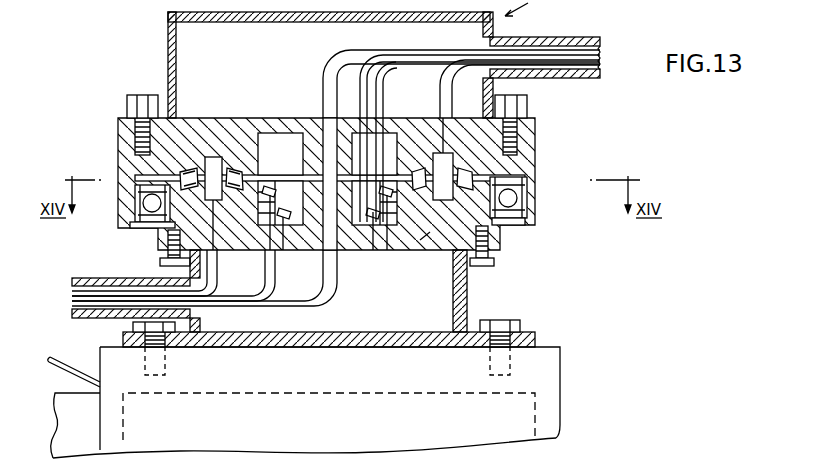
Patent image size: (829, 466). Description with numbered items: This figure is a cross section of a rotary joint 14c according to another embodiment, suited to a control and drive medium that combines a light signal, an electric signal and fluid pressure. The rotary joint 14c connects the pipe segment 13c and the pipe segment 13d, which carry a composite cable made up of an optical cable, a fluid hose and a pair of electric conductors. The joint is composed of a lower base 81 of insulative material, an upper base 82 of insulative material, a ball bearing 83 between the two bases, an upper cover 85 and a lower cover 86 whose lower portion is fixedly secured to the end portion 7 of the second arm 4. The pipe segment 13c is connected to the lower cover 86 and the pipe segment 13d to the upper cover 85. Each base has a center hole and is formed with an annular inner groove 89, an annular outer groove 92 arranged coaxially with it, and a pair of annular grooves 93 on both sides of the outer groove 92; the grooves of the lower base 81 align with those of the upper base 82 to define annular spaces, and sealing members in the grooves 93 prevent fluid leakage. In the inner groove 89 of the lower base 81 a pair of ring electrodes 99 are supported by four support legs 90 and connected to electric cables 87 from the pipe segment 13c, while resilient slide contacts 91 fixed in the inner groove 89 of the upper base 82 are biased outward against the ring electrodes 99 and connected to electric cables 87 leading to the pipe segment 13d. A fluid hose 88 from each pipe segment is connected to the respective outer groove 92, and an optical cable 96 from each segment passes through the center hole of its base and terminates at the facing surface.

The second arm 4 is at (66, 423).
The end portion of the second arm 7 is at (550, 395).
The pipe segment 13c is at (97, 280).
The pipe segment 13d is at (557, 37).
The rotary joint 14c is at (558, 7).
The lower base 81 is at (427, 237).
The upper base 82 is at (537, 147).
The ball bearing 83 is at (531, 186).
The upper cover 85 is at (172, 45).
The lower cover 86 is at (468, 305).
The electric cables 87 is at (385, 90).
The fluid hose 88 is at (440, 87).
The annular inner groove 89 is at (270, 147).
The support legs 90 is at (260, 232).
The slide contacts 91 is at (372, 232).
The annular outer groove 92 is at (210, 155).
The annular grooves 93 is at (187, 165).
The optical cable 96 is at (333, 73).
The ring electrodes 99 is at (287, 160).